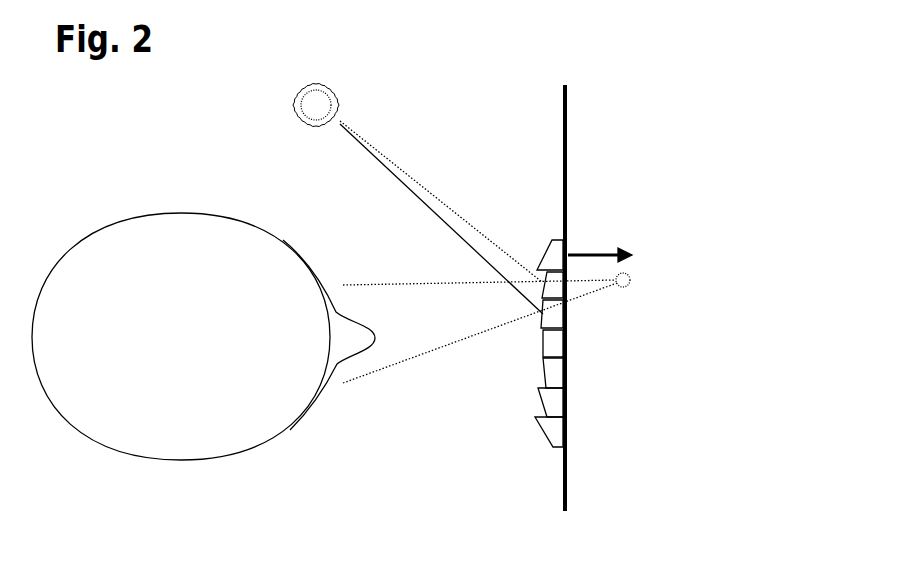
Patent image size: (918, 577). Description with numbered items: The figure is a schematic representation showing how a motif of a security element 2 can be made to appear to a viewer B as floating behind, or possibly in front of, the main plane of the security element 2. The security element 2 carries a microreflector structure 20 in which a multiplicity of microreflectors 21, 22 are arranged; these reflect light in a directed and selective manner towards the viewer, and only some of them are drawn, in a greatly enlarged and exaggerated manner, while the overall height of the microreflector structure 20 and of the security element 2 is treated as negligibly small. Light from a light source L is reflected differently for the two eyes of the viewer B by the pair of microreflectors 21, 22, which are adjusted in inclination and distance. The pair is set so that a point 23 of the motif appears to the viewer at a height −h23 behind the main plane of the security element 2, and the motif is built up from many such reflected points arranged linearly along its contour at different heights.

The security element 2 is at (564, 283).
The microreflector structure 20 is at (541, 345).
The microreflector 21 is at (555, 292).
The microreflector 22 is at (553, 318).
The point of the motif 23 is at (642, 280).
The height of the point h23 is at (600, 235).
The light source L is at (316, 105).
The viewer B is at (203, 336).